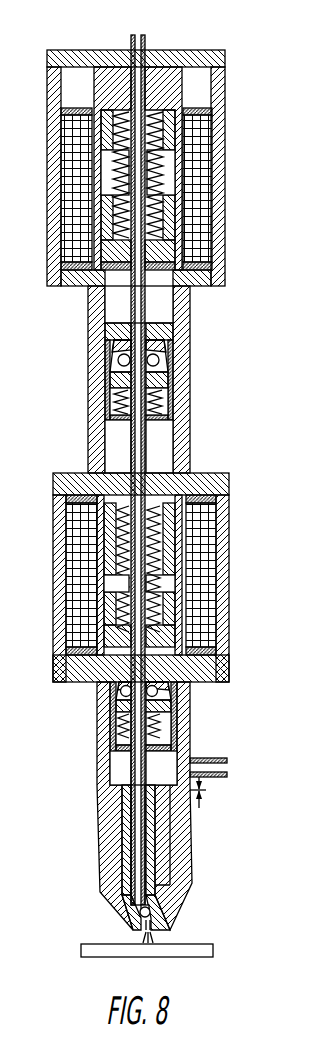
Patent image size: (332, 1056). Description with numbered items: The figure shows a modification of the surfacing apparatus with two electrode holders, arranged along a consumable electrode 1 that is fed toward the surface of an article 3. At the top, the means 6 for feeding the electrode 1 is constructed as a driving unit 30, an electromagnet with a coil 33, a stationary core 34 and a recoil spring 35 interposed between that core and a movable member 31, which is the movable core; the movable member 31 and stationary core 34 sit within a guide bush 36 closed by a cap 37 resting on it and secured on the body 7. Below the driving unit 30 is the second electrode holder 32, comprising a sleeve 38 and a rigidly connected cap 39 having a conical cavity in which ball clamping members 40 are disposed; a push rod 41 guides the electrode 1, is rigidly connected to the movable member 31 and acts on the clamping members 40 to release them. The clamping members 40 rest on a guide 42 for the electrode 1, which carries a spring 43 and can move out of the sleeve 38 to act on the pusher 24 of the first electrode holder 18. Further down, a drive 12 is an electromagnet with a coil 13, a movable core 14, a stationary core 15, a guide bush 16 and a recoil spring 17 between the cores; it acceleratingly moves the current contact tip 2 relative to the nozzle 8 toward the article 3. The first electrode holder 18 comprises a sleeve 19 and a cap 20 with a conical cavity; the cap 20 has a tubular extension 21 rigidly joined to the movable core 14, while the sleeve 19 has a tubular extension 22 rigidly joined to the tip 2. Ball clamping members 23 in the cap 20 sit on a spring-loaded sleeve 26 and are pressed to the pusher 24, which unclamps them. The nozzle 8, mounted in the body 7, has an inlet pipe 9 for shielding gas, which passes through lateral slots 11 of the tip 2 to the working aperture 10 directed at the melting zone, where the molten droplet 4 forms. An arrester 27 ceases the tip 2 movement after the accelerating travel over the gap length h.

The consumable electrode 1 is at (141, 50).
The current contact tip 2 is at (130, 865).
The article 3 is at (213, 948).
The molten droplet 4 is at (160, 918).
The means for feeding the electrode 6 is at (64, 300).
The body 7 is at (56, 277).
The nozzle 8 is at (184, 878).
The inlet pipe 9 is at (210, 778).
The working aperture 10 is at (143, 926).
The lateral slots 11 is at (124, 827).
The drive 12 is at (230, 551).
The coil 13 is at (72, 567).
The movable core 14 is at (72, 530).
The stationary core 15 is at (106, 632).
The guide bush 16 is at (184, 617).
The recoil spring 17 is at (108, 600).
The electrode holder 18 is at (124, 763).
The sleeve 19 is at (112, 728).
The cap 20 is at (112, 662).
The tubular extension 21 is at (183, 494).
The tubular extension 22 is at (160, 823).
The clamping members 23 is at (181, 700).
The pusher 24 is at (188, 640).
The spring-loaded sleeve 26 is at (179, 729).
The arrester 27 is at (96, 793).
The driving unit 30 is at (228, 200).
The movable member 31 is at (112, 70).
The second electrode holder 32 is at (162, 431).
The coil 33 is at (66, 200).
The stationary core 34 is at (108, 240).
The recoil spring 35 is at (162, 163).
The guide bush 36 is at (100, 162).
The cap 37 is at (205, 68).
The sleeve 38 is at (108, 372).
The cap 39 is at (108, 329).
The clamping members 40 is at (156, 358).
The push rod 41 is at (148, 310).
The guide 42 is at (166, 398).
The spring 43 is at (110, 404).
The length of gap h is at (203, 795).